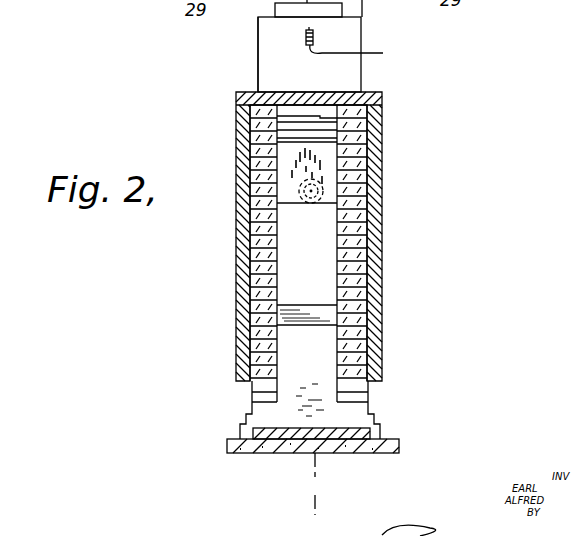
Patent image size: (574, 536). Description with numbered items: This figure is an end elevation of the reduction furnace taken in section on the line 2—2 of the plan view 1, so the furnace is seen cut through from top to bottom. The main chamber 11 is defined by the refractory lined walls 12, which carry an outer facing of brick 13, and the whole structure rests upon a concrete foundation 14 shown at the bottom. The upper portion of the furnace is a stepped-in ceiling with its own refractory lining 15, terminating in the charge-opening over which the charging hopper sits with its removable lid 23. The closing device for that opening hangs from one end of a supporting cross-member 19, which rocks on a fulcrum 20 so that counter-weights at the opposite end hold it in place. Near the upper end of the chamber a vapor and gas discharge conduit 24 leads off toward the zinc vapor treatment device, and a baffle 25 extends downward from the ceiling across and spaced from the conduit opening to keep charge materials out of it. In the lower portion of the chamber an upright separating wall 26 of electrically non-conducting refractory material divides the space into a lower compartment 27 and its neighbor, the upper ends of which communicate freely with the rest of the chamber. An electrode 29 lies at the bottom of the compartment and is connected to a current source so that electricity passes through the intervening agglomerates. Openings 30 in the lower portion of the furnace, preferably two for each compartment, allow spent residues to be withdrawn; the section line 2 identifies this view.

The section line 1 is at (303, 493).
The top housing 2 is at (323, 46).
The main chamber 11 is at (307, 253).
The refractory lined walls 12 is at (383, 167).
The outer facing of brick 13 is at (372, 195).
The concrete foundation 14 is at (228, 446).
The refractory lining 15 is at (335, 118).
The supporting cross-member 19 is at (357, 55).
The fulcrum 20 is at (313, 36).
The removable lid 23 is at (258, 17).
The vapor and gas discharge conduit 24 is at (311, 203).
The baffle 25 is at (320, 150).
The separating wall 26 is at (330, 318).
The lower compartment 27 is at (310, 381).
The electrode 29 is at (356, 440).
The opening 30 is at (246, 384).